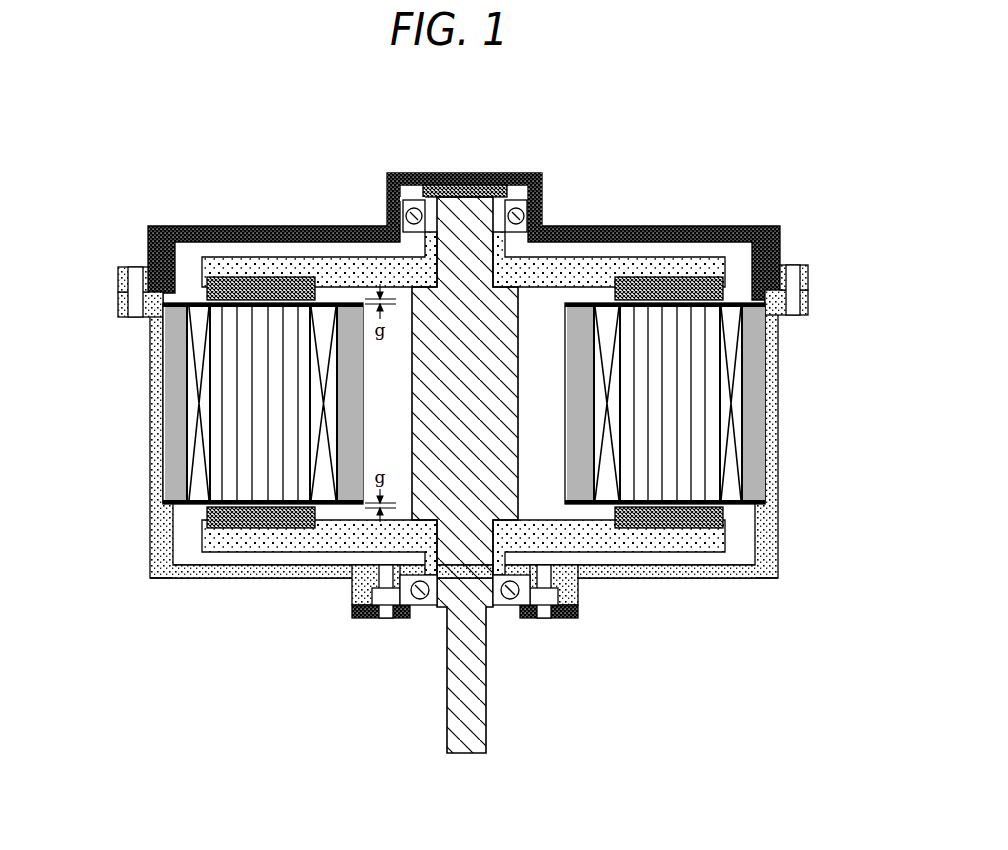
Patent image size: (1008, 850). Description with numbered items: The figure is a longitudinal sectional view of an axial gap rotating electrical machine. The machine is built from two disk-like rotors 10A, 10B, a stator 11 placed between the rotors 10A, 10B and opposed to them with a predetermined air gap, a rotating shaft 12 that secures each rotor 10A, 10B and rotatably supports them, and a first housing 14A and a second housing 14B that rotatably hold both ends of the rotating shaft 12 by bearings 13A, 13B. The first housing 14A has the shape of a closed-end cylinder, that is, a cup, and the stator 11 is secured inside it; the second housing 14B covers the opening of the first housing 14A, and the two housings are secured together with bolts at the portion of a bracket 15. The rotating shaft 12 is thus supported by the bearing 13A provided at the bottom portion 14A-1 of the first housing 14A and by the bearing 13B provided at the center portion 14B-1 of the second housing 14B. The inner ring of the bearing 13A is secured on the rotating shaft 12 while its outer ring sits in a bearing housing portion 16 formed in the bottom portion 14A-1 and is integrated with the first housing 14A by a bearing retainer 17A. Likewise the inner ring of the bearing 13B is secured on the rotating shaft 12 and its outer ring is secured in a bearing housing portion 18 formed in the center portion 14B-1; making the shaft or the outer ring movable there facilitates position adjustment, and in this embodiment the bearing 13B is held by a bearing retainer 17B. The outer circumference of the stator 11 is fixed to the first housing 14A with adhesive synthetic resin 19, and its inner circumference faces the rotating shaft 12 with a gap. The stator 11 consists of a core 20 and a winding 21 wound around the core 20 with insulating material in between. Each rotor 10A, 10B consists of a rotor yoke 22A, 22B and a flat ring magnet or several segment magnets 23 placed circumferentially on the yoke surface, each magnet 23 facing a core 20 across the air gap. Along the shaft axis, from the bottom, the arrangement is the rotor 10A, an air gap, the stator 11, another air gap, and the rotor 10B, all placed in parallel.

The rotor 10A is at (668, 548).
The rotor 10B is at (592, 258).
The stator 11 is at (463, 403).
The rotating shaft 12 is at (462, 753).
The bearing 13A is at (432, 606).
The bearing 13B is at (405, 200).
The first housing 14A is at (732, 578).
The bottom portion 14A-1 is at (614, 578).
The second housing 14B is at (735, 228).
The center portion 14B-1 is at (515, 176).
The bracket 15 is at (806, 302).
The bearing housing portion 16 is at (372, 577).
The bearing retainer 17A is at (547, 620).
The bearing retainer 17B is at (465, 186).
The bearing housing portion 18 is at (409, 192).
The synthetic resin 19 is at (173, 403).
The core 20 is at (258, 357).
The winding 21 is at (200, 478).
The rotor yoke 22A is at (276, 546).
The rotor yoke 22B is at (292, 265).
The ring magnet 23 is at (234, 283).